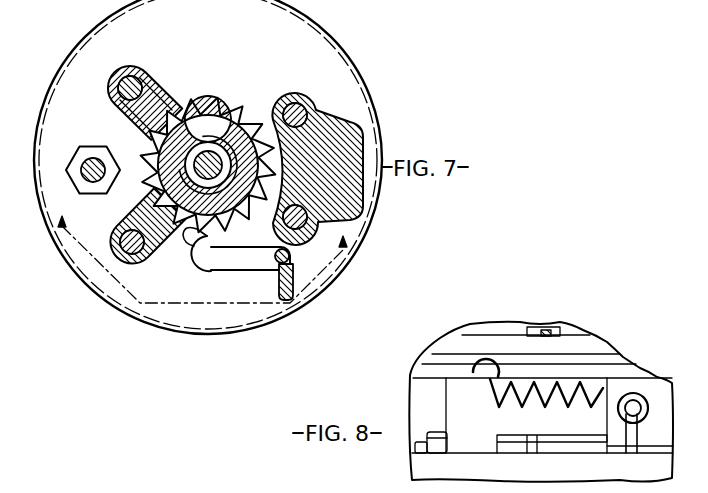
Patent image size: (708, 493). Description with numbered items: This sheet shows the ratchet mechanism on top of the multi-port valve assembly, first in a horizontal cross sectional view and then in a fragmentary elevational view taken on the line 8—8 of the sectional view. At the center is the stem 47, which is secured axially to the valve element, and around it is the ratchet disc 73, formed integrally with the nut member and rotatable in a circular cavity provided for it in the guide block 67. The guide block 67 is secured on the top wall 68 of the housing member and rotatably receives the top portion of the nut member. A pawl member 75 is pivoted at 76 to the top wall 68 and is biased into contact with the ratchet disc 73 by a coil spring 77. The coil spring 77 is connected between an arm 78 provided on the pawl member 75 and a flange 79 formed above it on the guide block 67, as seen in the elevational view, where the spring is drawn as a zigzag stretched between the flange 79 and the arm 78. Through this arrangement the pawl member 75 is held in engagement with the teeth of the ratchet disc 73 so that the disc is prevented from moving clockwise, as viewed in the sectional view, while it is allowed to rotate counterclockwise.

In FIG. 7, the section line 8— 8 is at (202, 251).
In FIG. 7, the stem 47 is at (208, 150).
In FIG. 8, the stem 47 is at (548, 325).
In FIG. 7, the guide block 67 is at (341, 128).
In FIG. 7, the top wall 68 is at (232, 317).
In FIG. 7, the ratchet disc 73 is at (190, 244).
In FIG. 7, the pawl member 75 is at (224, 270).
In FIG. 8, the pawl member 75 is at (597, 450).
In FIG. 7, the pivot 76 is at (290, 257).
In FIG. 8, the coil spring 77 is at (510, 400).
In FIG. 7, the arm 78 is at (278, 284).
In FIG. 8, the arm 78 is at (638, 436).
In FIG. 8, the flange 79 is at (450, 370).